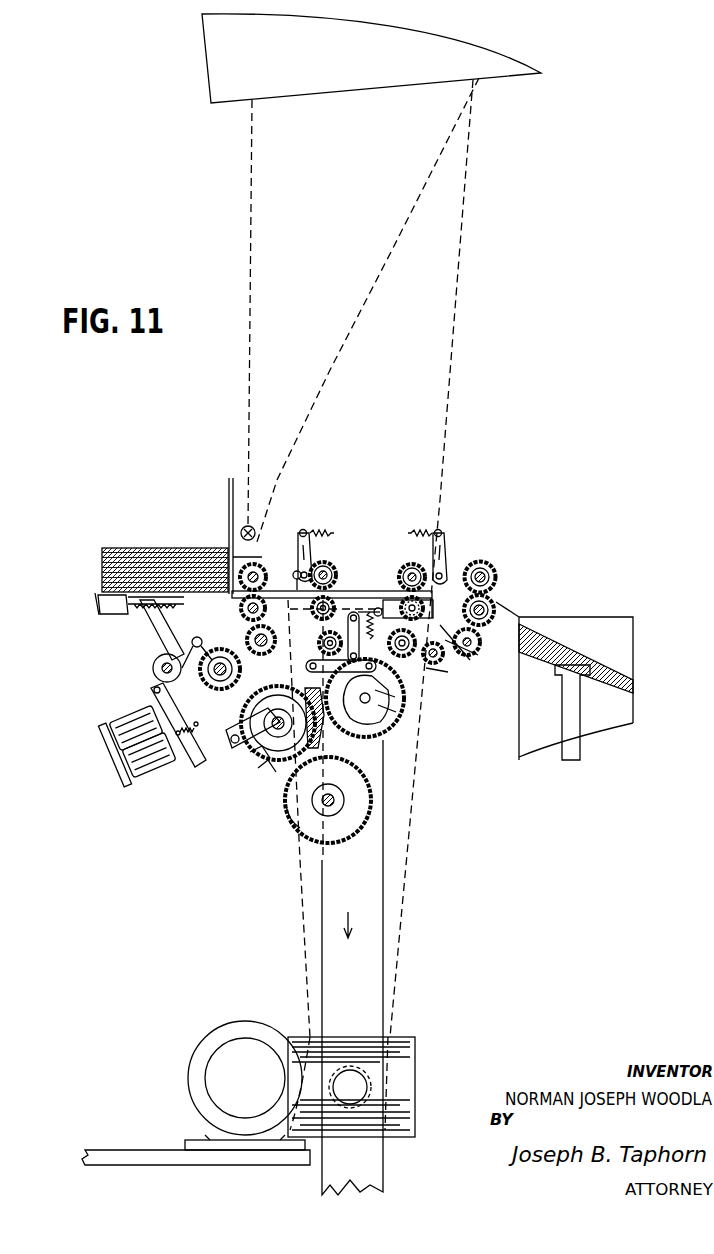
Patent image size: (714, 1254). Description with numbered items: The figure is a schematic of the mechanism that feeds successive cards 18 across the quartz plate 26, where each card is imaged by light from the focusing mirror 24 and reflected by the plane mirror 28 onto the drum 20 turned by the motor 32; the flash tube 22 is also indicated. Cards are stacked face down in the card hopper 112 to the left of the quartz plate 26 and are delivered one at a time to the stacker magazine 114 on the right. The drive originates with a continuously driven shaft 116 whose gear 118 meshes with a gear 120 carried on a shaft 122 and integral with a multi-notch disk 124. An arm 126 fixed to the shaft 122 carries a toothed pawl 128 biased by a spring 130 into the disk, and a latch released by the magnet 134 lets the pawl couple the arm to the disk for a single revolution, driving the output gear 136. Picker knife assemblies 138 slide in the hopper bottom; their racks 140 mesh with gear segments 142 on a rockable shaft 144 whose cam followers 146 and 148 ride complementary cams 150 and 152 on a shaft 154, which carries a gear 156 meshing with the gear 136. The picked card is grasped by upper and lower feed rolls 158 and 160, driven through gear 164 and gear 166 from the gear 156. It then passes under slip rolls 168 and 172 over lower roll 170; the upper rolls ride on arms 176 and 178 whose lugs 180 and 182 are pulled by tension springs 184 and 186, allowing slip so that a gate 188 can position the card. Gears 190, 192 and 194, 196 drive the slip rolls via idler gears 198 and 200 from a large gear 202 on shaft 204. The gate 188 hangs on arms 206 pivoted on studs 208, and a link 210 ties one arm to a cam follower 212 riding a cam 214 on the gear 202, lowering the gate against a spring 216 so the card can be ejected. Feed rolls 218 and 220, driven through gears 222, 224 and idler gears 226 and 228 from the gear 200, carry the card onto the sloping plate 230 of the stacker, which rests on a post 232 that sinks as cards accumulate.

The card 18 is at (352, 591).
The drum 20 is at (385, 940).
The tube 22 is at (243, 528).
The focusing mirror 24 is at (330, 95).
The quartz plate 26 is at (371, 600).
The plane mirror 28 is at (416, 1087).
The motor 32 is at (190, 1068).
The card hopper 112 is at (143, 541).
The stacker magazine 114 is at (622, 609).
The shaft 116 is at (336, 806).
The gear 118 is at (296, 836).
The gear 120 is at (270, 805).
The shaft 122 is at (248, 745).
The multi-notch disk 124 is at (258, 752).
The arm 126 is at (232, 737).
The toothed pawl 128 is at (210, 762).
The spring 130 is at (268, 772).
The magnet 134 is at (130, 760).
The gear 136 is at (238, 676).
The picker knife assemblies 138 is at (104, 600).
The racks 140 is at (112, 604).
The gear segments 142 is at (122, 612).
The rockable shaft 144 is at (160, 670).
The cam follower 146 is at (172, 657).
The cam follower 148 is at (156, 690).
The cam 150 is at (213, 660).
The cam 152 is at (191, 645).
The rotatable shaft 154 is at (189, 717).
The gear 156 is at (252, 640).
The upper feed roll 158 is at (258, 564).
The lower feed roll 160 is at (240, 608).
The gear 164 is at (313, 614).
The gear 166 is at (319, 647).
The upper slip roll 168 is at (330, 566).
The lower slip roll 170 is at (320, 640).
The upper slip roll 172 is at (412, 563).
The arm 176 is at (304, 545).
The arm 178 is at (447, 565).
The lug 180 is at (306, 548).
The lug 182 is at (443, 538).
The tension spring 184 is at (320, 531).
The tension spring 186 is at (434, 532).
The gate 188 is at (433, 602).
The gear 190 is at (358, 580).
The gear 192 is at (310, 604).
The gear 194 is at (382, 590).
The gear 196 is at (452, 655).
The idler gear 198 is at (333, 663).
The idler gear 200 is at (436, 664).
The large gear 202 is at (390, 732).
The shaft 204 is at (404, 652).
The arms 206 is at (470, 654).
The studs 208 is at (380, 606).
The link 210 is at (400, 700).
The cam follower 212 is at (366, 699).
The cam 214 is at (398, 712).
The spring 216 is at (361, 619).
The feed roll 218 is at (492, 566).
The feed roll 220 is at (492, 613).
The gear 222 is at (494, 583).
The gear 224 is at (492, 602).
The idler gear 226 is at (483, 640).
The idler gear 228 is at (446, 672).
The sloping plate 230 is at (532, 655).
The post 232 is at (578, 718).